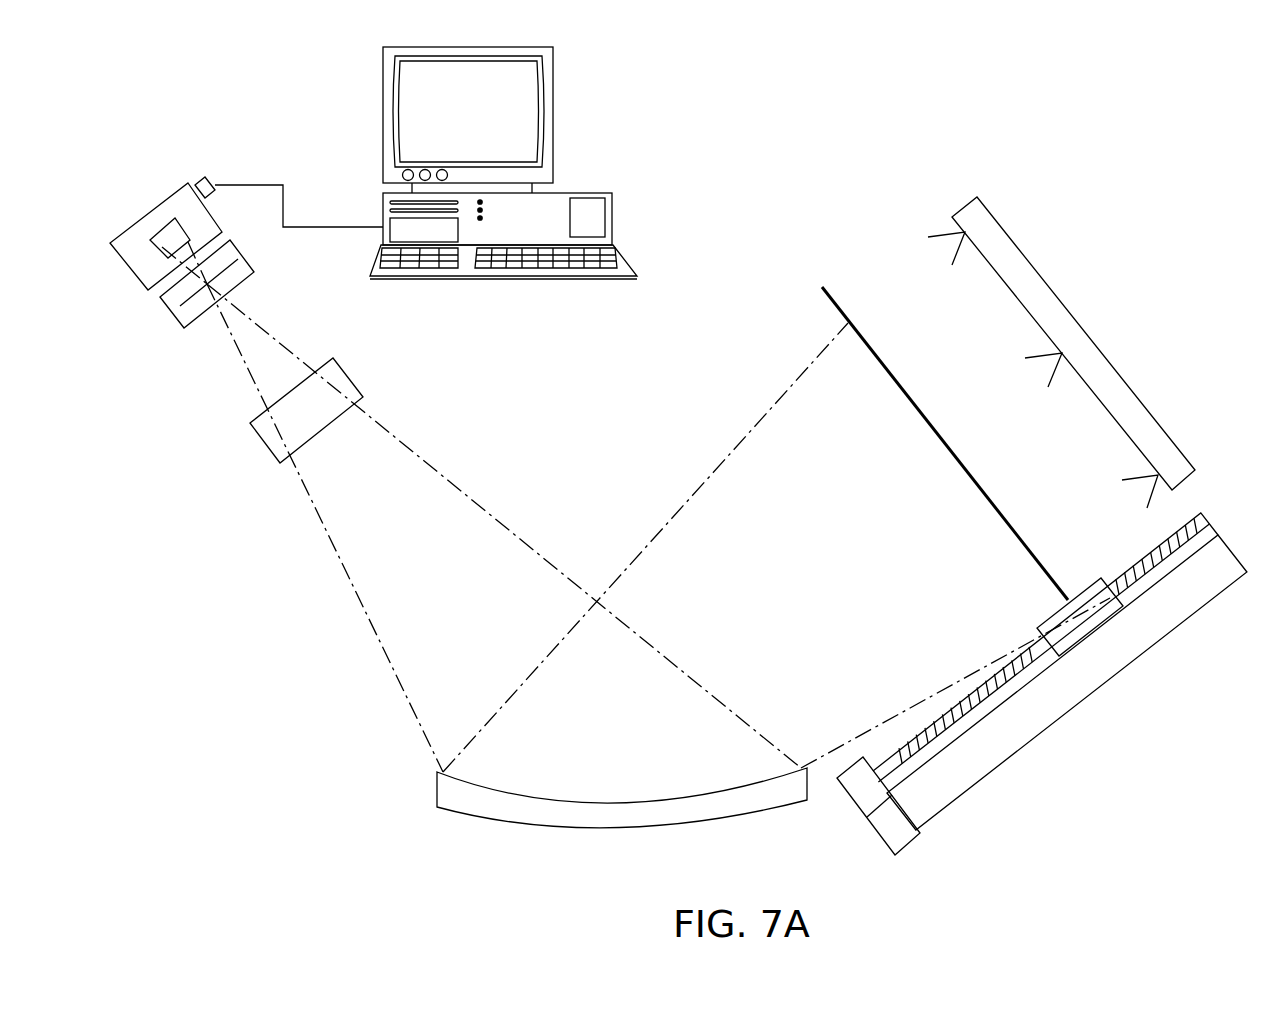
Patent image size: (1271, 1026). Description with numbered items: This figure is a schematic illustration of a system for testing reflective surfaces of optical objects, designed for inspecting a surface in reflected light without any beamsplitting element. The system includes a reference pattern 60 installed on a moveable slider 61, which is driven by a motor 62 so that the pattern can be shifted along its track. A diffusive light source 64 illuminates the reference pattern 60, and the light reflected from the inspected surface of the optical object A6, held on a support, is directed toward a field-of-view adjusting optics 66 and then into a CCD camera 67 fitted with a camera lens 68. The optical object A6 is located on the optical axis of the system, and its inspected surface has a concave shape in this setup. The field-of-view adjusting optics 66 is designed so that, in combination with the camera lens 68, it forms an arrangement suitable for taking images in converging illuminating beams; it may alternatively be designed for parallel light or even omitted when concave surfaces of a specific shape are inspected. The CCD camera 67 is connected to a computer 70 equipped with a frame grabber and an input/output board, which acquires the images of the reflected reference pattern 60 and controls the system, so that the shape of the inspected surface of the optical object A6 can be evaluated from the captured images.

The reference pattern 60 is at (832, 302).
The moveable slider 61 is at (1092, 623).
The motor 62 is at (902, 833).
The diffusive light source 64 is at (1078, 353).
The field-of-view adjusting optics 66 is at (270, 433).
The CCD camera 67 is at (146, 269).
The camera lens 68 is at (177, 297).
The computer 70 is at (543, 232).
The optical object A6 is at (458, 798).